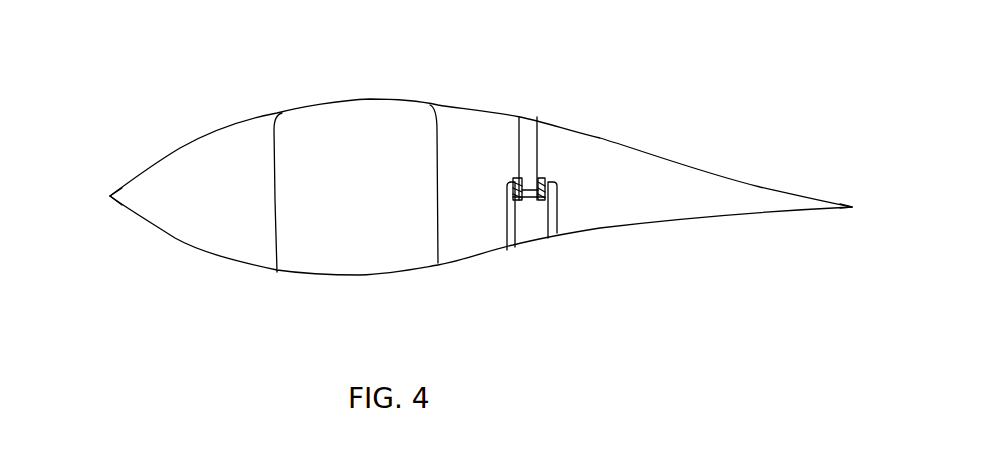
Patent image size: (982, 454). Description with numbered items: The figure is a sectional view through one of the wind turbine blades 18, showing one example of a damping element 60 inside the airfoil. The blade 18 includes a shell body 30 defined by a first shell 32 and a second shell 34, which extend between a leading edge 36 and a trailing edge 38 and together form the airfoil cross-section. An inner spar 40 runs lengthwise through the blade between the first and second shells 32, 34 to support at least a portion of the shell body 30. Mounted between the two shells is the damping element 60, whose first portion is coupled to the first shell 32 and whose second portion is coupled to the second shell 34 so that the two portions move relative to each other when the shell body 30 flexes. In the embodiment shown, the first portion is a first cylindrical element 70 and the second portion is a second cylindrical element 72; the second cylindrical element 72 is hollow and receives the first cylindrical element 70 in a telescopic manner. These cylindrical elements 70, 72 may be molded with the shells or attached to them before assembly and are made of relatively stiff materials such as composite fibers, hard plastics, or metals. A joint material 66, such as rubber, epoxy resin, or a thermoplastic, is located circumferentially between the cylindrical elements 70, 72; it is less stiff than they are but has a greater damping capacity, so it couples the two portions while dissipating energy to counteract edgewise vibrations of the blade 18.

The blade 18 is at (141, 36).
The shell body 30 is at (178, 139).
The first shell 32 is at (235, 125).
The second shell 34 is at (193, 248).
The leading edge 36 is at (108, 194).
The trailing edge 38 is at (853, 207).
The inner spar 40 is at (275, 187).
The damping element 60 is at (502, 158).
The joint material 66 is at (542, 168).
The first cylindrical element 70 is at (537, 138).
The second cylindrical element 72 is at (557, 223).